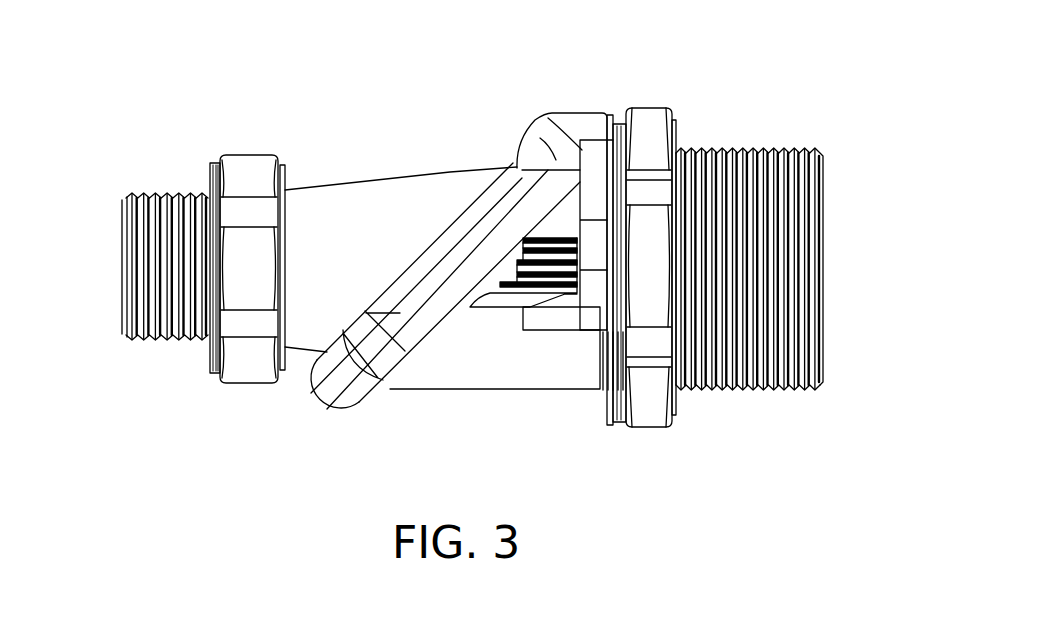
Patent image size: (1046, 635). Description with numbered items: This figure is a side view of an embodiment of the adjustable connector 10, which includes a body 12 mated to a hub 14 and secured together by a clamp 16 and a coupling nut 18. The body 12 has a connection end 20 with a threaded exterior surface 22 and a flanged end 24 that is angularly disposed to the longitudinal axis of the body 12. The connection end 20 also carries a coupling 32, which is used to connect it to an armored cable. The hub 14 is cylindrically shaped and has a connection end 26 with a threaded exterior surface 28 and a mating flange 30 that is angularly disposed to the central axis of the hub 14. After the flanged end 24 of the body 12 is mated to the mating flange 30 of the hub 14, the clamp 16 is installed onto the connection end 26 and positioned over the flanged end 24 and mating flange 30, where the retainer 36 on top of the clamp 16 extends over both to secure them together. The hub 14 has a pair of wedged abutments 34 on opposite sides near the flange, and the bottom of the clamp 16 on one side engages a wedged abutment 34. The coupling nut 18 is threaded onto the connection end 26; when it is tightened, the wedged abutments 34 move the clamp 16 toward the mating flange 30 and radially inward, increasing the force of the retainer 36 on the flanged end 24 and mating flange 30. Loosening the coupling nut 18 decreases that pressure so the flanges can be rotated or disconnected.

The adjustable connector 10 is at (397, 108).
The body 12 is at (224, 417).
The hub 14 is at (731, 112).
The clamp 16 is at (566, 113).
The coupling nut 18 is at (650, 428).
The connection end 20 is at (120, 257).
The threaded exterior surface 22 is at (163, 190).
The flanged end 24 is at (309, 374).
The connection end 26 is at (823, 250).
The threaded exterior surface 28 is at (732, 390).
The mating flange 30 is at (377, 402).
The coupling 32 is at (243, 152).
The wedged abutments 34 is at (562, 318).
The retainer 36 is at (537, 118).